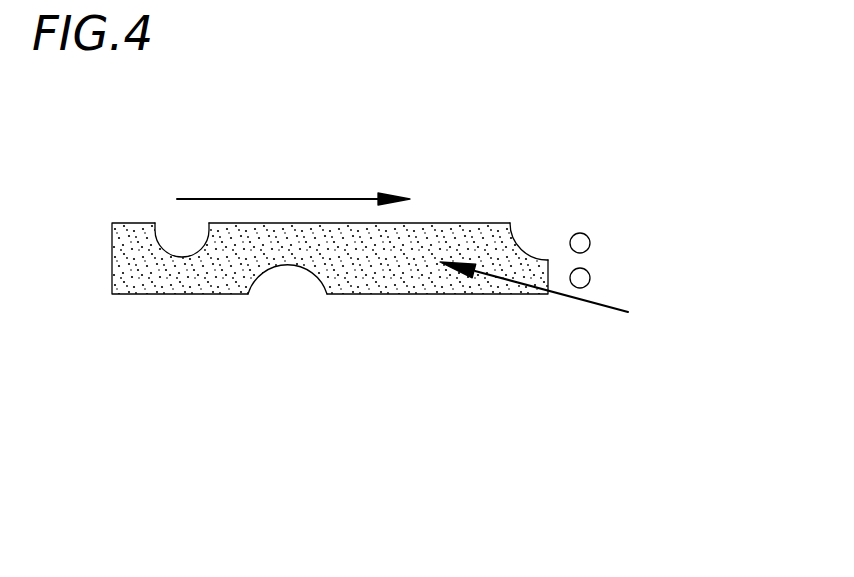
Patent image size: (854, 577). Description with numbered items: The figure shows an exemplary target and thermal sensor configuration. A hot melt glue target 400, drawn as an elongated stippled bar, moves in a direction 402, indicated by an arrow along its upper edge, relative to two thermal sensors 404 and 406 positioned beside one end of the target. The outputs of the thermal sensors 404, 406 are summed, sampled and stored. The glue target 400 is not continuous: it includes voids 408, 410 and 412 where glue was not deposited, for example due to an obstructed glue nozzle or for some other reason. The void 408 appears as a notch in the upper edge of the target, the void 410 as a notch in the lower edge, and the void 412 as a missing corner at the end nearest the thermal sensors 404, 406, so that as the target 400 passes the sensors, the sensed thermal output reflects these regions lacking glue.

The hot melt glue target 400 is at (175, 287).
The direction 402 is at (272, 199).
The thermal sensor 404 is at (590, 243).
The thermal sensor 406 is at (590, 278).
The void 408 is at (180, 233).
The void 410 is at (277, 285).
The void 412 is at (522, 240).